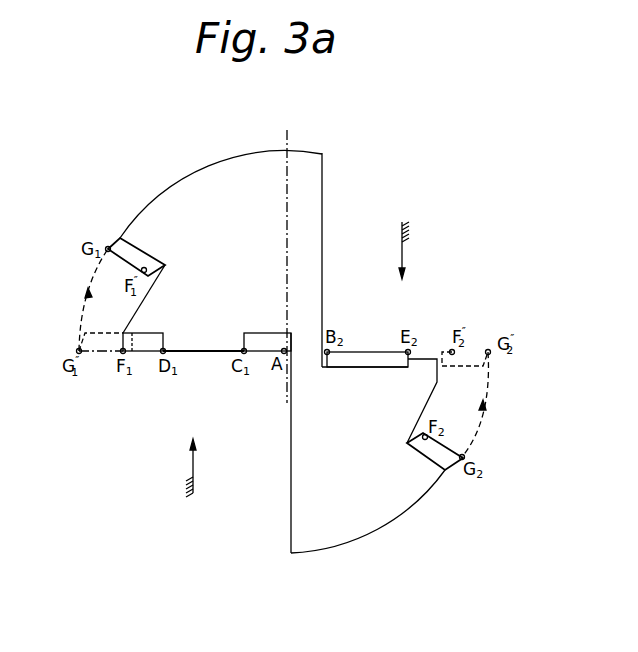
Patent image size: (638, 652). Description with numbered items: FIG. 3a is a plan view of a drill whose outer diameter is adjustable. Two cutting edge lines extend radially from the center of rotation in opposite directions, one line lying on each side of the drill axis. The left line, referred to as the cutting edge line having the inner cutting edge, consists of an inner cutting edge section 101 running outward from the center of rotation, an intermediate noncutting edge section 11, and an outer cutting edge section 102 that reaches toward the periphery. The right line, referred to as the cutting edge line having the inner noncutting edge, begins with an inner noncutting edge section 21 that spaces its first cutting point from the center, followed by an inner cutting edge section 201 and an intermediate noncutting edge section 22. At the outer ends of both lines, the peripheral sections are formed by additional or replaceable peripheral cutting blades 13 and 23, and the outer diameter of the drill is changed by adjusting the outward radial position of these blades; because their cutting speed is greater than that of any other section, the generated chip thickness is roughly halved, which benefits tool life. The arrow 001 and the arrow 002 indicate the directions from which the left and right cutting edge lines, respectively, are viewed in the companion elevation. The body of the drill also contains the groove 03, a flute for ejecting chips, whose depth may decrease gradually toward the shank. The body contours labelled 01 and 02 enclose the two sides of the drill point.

The first body part 01 is at (225, 177).
The second body part 02 is at (388, 505).
The groove 03 is at (172, 442).
The arrow 001 is at (193, 463).
The arrow 002 is at (403, 245).
The intermediate noncutting edge section 11 is at (207, 348).
The peripheral cutting blade 13 is at (123, 264).
The inner noncutting edge section 21 is at (307, 345).
The intermediate noncutting edge section 22 is at (427, 357).
The peripheral cutting blade 23 is at (450, 448).
The inner cutting edge section 101 is at (265, 352).
The outer cutting edge section 102 is at (138, 353).
The inner cutting edge section 201 is at (365, 350).